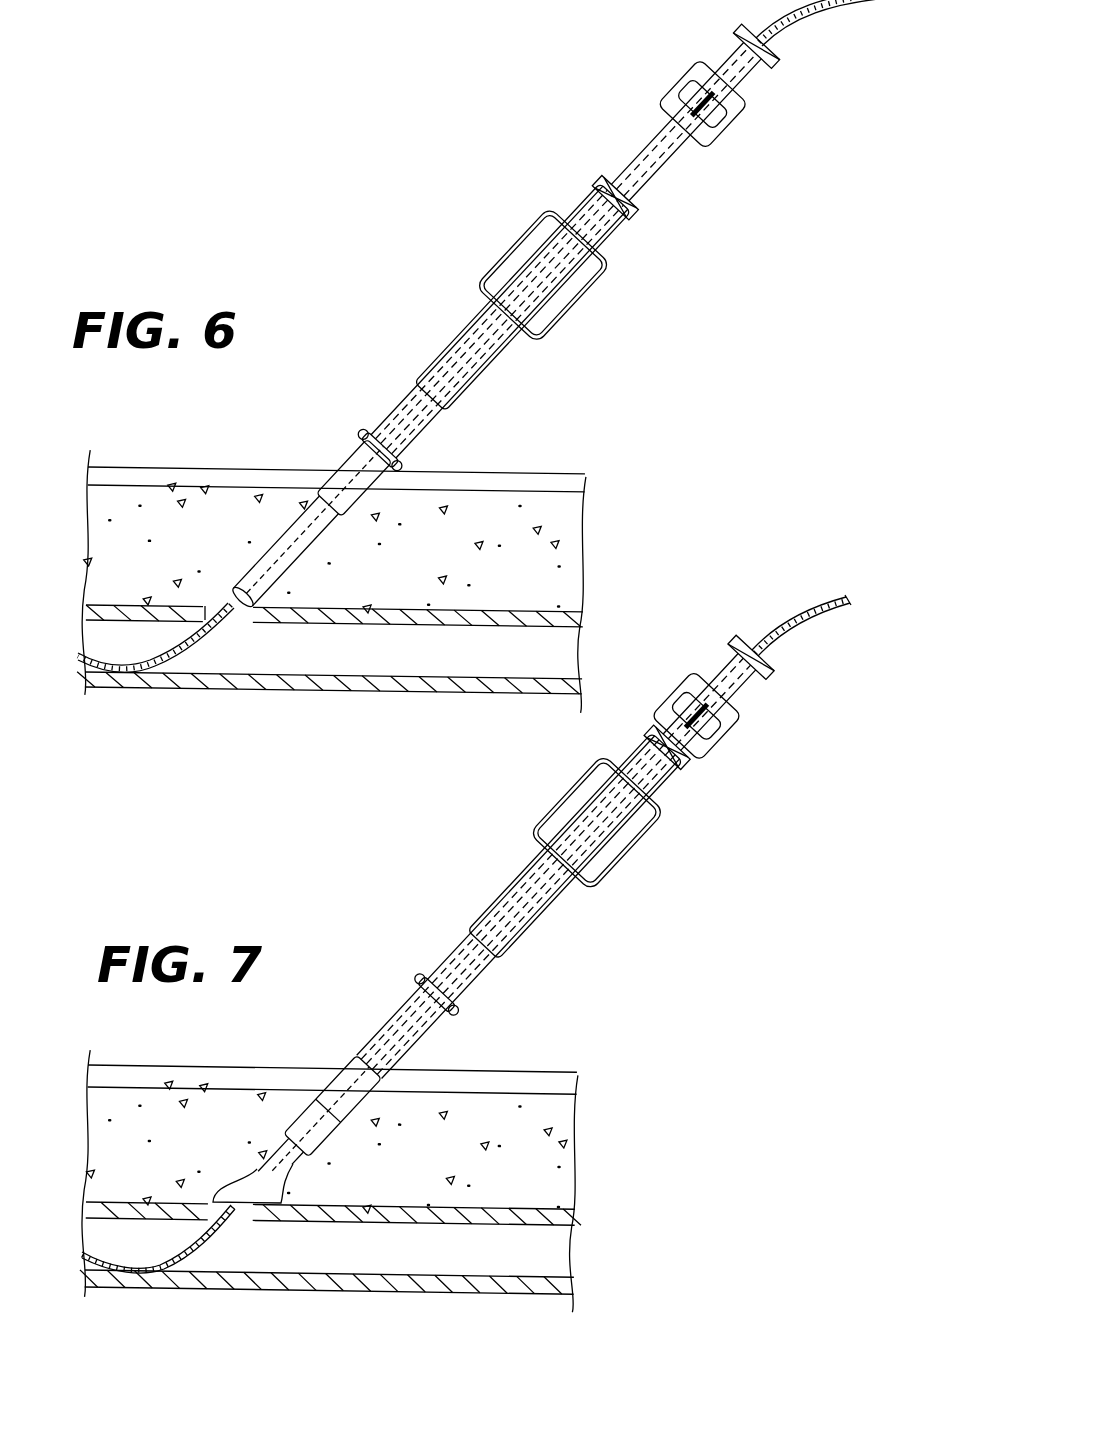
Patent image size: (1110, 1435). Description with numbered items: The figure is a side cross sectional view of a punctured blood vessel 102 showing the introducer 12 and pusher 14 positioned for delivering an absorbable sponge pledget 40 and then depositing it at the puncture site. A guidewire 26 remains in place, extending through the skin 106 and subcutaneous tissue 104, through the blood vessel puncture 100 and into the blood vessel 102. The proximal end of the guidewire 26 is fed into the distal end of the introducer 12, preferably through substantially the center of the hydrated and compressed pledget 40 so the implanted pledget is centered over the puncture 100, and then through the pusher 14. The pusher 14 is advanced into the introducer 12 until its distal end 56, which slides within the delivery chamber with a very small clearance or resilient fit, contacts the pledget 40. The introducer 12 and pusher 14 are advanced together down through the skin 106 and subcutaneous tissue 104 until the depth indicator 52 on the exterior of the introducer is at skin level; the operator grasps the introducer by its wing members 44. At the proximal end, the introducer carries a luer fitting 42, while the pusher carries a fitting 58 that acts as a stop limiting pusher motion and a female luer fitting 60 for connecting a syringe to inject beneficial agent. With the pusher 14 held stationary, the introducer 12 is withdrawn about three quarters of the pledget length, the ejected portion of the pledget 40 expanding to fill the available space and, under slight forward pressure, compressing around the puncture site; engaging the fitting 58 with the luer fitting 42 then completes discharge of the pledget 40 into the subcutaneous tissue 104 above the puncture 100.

In FIG. 6, the introducer 12 is at (445, 331).
In FIG. 7, the introducer 12 is at (482, 886).
In FIG. 6, the pusher 14 is at (644, 150).
In FIG. 7, the pusher 14 is at (706, 655).
In FIG. 6, the guidewire 26 is at (815, 22).
In FIG. 7, the guidewire 26 is at (820, 618).
In FIG. 6, the absorbable sponge pledget 40 is at (262, 560).
In FIG. 7, the absorbable sponge pledget 40 is at (260, 1175).
In FIG. 6, the luer fitting 42 is at (637, 210).
In FIG. 7, the luer fitting 42 is at (685, 768).
In FIG. 6, the wing members 44 is at (582, 315).
In FIG. 7, the wing members 44 is at (628, 858).
In FIG. 6, the introducer depth indicator 52 is at (371, 440).
In FIG. 7, the introducer depth indicator 52 is at (452, 1008).
In FIG. 6, the distal end of the pusher 56 is at (342, 483).
In FIG. 7, the distal end of the pusher 56 is at (342, 1085).
In FIG. 6, the fitting 58 is at (732, 130).
In FIG. 7, the fitting 58 is at (727, 743).
In FIG. 6, the female luer fitting 60 is at (775, 62).
In FIG. 7, the female luer fitting 60 is at (775, 678).
In FIG. 6, the blood vessel puncture 100 is at (230, 636).
In FIG. 6, the blood vessel 102 is at (395, 690).
In FIG. 7, the blood vessel 102 is at (455, 1292).
In FIG. 6, the subcutaneous tissue 104 is at (580, 530).
In FIG. 7, the subcutaneous tissue 104 is at (555, 1105).
In FIG. 6, the skin 106 is at (552, 476).
In FIG. 7, the skin 106 is at (535, 1078).